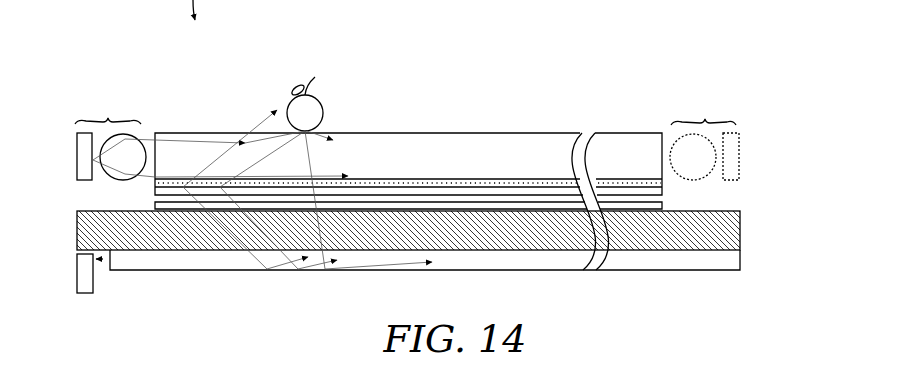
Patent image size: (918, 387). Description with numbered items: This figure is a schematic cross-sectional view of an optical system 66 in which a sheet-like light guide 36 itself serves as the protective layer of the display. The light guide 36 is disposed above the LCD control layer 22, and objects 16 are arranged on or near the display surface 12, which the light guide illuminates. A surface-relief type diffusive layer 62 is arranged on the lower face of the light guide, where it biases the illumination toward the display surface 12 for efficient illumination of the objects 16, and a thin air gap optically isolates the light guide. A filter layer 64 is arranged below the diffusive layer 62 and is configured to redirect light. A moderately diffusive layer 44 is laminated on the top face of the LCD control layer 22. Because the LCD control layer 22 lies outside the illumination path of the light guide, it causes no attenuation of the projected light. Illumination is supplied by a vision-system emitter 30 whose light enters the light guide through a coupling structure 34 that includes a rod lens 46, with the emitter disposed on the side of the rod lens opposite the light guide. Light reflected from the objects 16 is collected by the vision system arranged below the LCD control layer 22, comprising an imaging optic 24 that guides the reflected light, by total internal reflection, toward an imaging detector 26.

The display surface 12 is at (420, 126).
The object 16 is at (305, 104).
The LCD control layer 22 is at (742, 230).
The imaging optic 24 is at (212, 271).
The imaging detector 26 is at (77, 271).
The vision-system emitter 30 is at (77, 158).
The coupling structure 34 is at (407, 139).
The sheet-like light guide 36 is at (629, 156).
The moderately diffusive layer 44 is at (443, 211).
The rod lens 46 is at (123, 157).
The surface-relief type diffusive layer 62 is at (388, 179).
The filter layer 64 is at (443, 191).
The optical system 66 is at (158, 10).